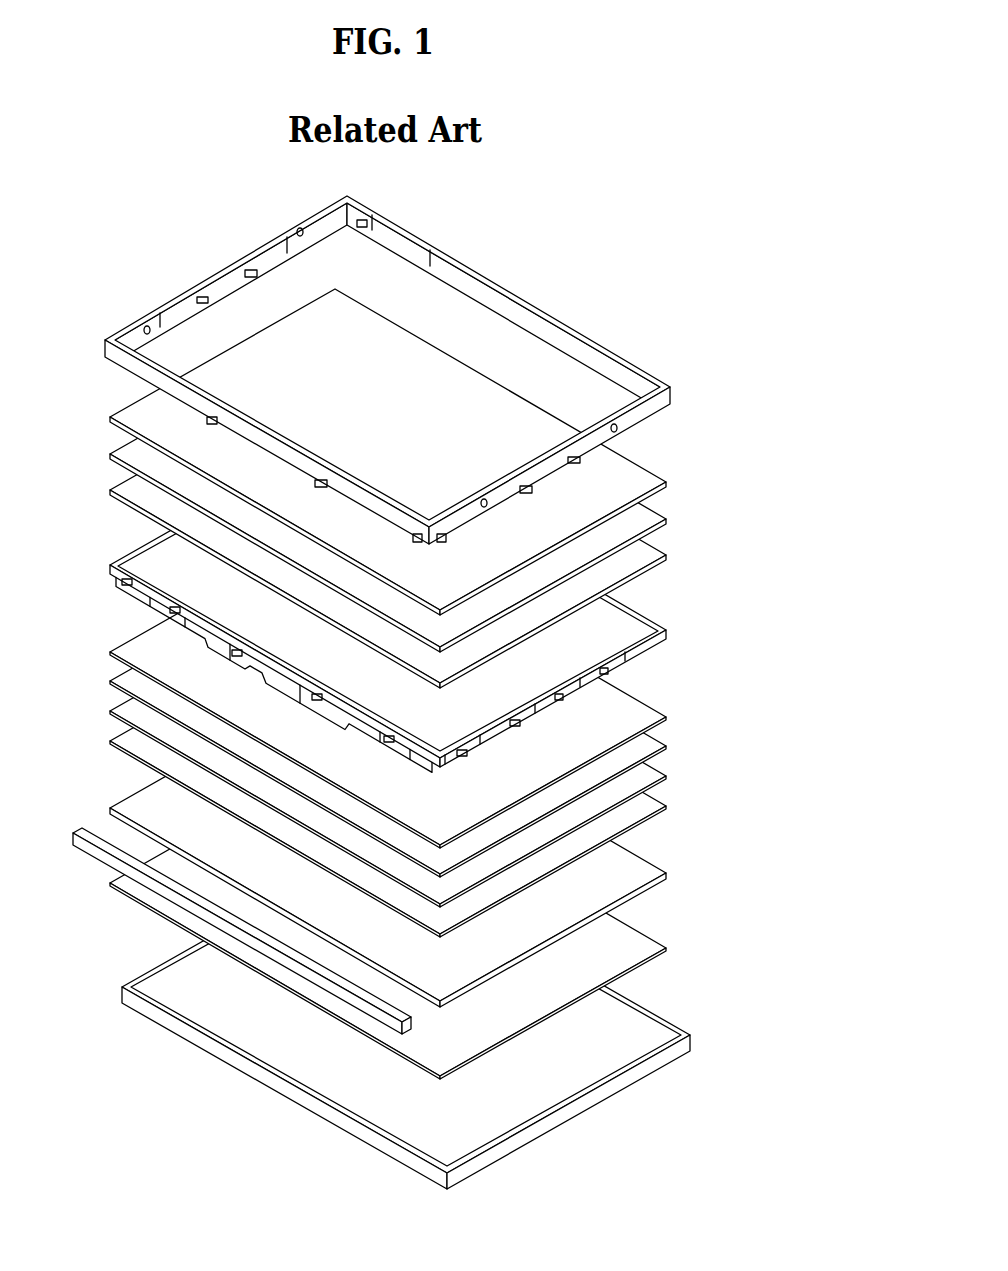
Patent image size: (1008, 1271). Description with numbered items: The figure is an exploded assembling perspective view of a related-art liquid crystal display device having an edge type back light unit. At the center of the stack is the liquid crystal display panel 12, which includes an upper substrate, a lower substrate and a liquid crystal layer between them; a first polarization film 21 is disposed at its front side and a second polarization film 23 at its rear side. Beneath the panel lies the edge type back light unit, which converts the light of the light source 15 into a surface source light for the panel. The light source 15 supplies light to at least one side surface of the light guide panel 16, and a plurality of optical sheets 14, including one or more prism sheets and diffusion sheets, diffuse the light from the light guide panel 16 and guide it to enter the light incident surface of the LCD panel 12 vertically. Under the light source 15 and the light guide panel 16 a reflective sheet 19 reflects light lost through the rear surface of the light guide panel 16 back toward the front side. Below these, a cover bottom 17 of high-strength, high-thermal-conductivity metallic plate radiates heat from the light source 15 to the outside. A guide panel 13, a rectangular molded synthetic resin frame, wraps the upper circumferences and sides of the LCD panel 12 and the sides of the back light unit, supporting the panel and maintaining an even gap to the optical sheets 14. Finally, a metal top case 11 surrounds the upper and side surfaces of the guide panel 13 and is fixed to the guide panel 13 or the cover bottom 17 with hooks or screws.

The top case 11 is at (650, 378).
The first polarization film 21 is at (642, 474).
The liquid crystal display panel 12 is at (646, 512).
The second polarization film 23 is at (642, 556).
The guide panel 13 is at (650, 626).
The optical sheets 14 is at (675, 712).
The light source 15 is at (105, 854).
The light guide panel 16 is at (648, 872).
The reflective sheet 19 is at (655, 945).
The cover bottom 17 is at (668, 1028).